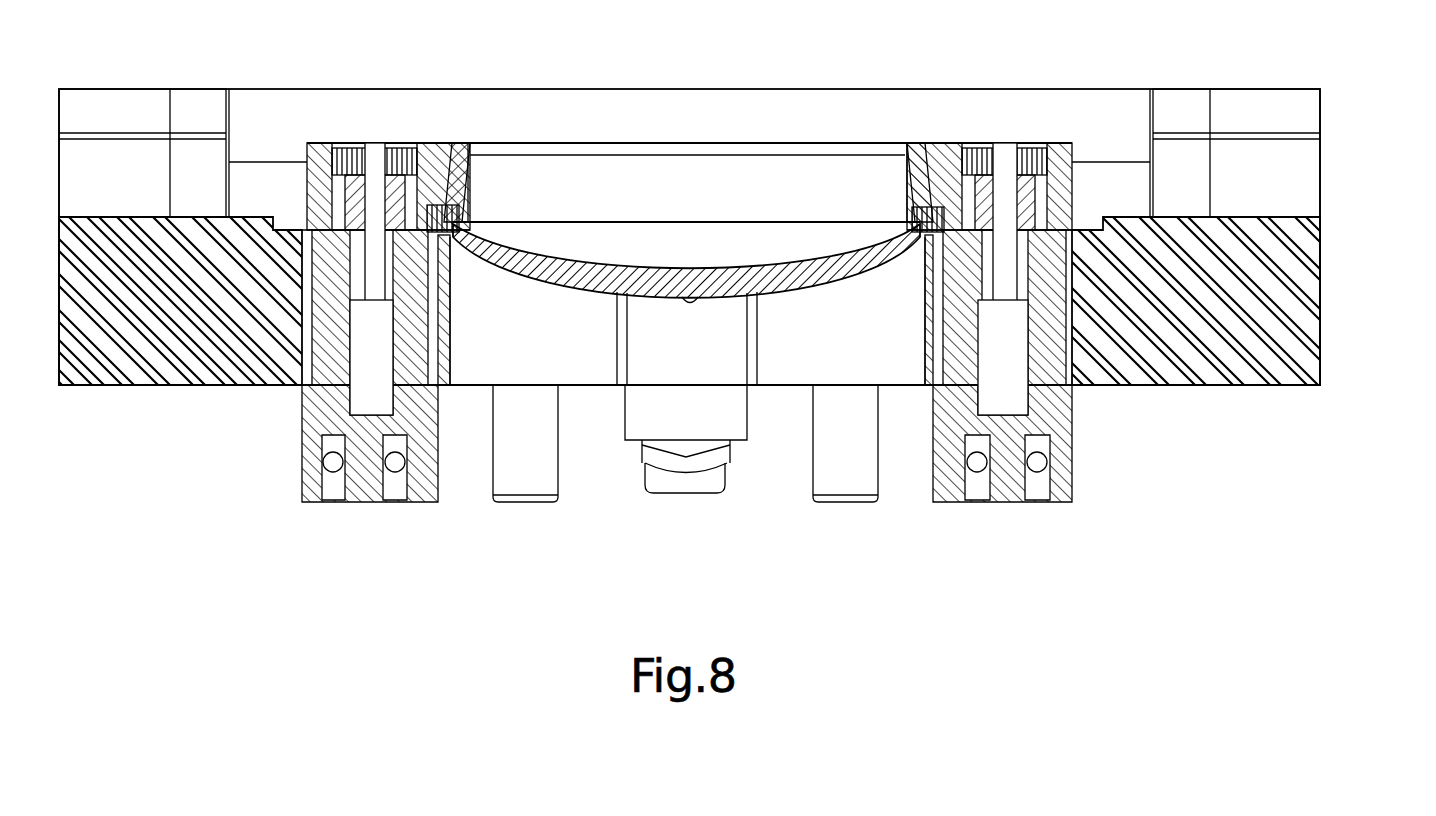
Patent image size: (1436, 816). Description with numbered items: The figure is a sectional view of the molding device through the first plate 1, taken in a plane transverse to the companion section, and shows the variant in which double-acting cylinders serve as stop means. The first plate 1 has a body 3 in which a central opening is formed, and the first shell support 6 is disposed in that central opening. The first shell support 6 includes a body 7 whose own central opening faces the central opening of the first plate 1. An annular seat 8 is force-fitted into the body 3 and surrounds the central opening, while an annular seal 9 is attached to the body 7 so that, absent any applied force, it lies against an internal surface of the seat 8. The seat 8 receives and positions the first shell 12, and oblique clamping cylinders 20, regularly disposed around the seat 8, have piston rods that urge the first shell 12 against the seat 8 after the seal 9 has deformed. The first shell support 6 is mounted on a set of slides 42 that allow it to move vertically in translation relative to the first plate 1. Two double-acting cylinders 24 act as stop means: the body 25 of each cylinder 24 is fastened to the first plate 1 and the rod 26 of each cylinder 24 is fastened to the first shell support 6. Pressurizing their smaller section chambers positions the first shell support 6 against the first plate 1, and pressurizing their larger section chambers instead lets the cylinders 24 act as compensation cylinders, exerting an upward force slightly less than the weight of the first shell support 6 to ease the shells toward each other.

The first plate 1 is at (1332, 296).
The body 3 is at (1303, 356).
The first shell support 6 is at (938, 140).
The body 7 is at (1070, 163).
The annular seat 8 is at (458, 218).
The annular seal 9 is at (478, 160).
The first shell 12 is at (642, 272).
The clamping cylinder 20 is at (672, 493).
The double-acting cylinder 24 is at (292, 461).
The body 25 is at (428, 410).
The rod 26 is at (375, 150).
The slide 42 is at (530, 497).